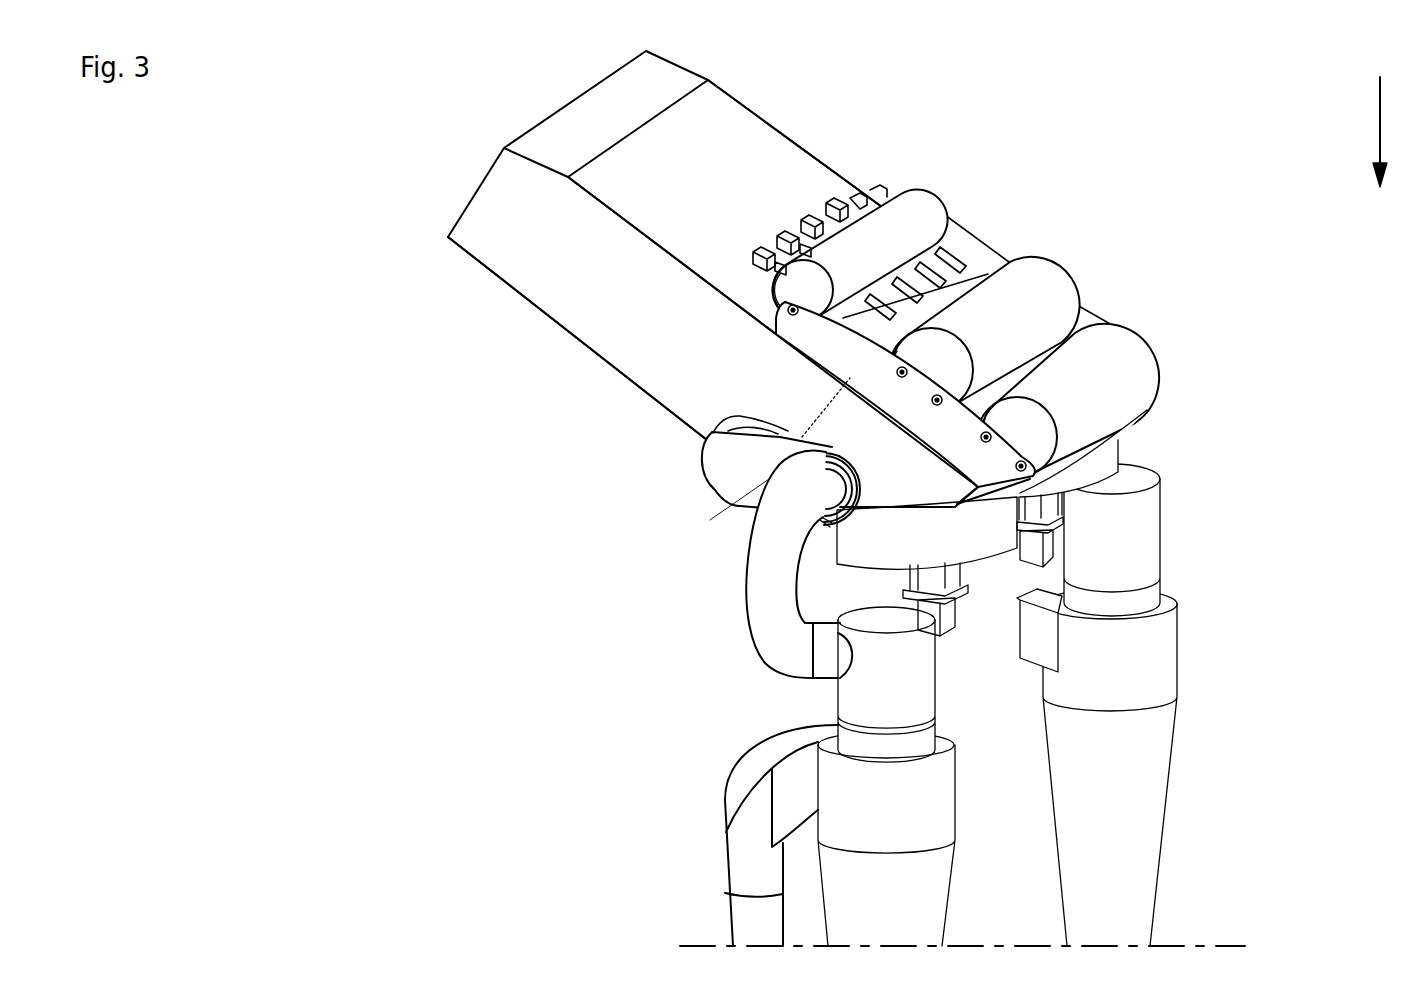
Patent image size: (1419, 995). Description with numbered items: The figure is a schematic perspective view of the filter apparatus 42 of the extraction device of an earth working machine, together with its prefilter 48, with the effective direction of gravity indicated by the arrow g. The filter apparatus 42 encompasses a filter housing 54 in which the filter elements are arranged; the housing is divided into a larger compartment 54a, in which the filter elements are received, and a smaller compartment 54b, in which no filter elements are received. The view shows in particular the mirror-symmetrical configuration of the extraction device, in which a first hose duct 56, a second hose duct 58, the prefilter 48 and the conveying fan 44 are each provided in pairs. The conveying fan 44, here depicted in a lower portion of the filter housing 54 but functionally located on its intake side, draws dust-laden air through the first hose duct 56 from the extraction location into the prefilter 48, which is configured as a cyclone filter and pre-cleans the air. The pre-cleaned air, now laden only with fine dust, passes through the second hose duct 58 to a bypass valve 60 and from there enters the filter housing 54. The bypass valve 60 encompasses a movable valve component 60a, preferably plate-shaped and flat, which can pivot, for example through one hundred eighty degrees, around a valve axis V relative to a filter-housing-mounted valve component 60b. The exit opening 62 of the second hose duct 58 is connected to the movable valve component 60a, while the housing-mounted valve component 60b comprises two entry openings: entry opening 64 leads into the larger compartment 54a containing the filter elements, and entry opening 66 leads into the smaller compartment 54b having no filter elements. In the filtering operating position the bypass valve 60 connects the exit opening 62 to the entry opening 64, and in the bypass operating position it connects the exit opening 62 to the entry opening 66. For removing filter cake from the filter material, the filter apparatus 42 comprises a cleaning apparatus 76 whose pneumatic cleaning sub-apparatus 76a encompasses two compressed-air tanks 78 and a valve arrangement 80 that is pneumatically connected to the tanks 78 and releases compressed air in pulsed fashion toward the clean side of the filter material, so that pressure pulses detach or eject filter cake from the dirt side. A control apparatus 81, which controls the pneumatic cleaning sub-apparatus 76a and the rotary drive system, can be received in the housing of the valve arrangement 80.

The filter apparatus 42 is at (835, 150).
The conveying fan 44 is at (895, 559).
The prefilter 48 is at (1117, 680).
The filter housing 54 is at (765, 178).
The larger compartment 54a is at (572, 324).
The smaller compartment 54b is at (880, 489).
The first hose duct 56 is at (750, 923).
The second hose duct 58 is at (767, 613).
The bypass valve 60 is at (722, 464).
The movable valve component 60a is at (723, 482).
The filter-housing-mounted valve component 60b is at (720, 423).
The exit opening 62 is at (830, 450).
The entry opening 64 is at (733, 430).
The entry opening 66 is at (827, 521).
The cleaning apparatus 76 is at (927, 324).
The pneumatic cleaning sub-apparatus 76a is at (777, 214).
The compressed-air tank 78 is at (1000, 333).
The valve arrangement 80 is at (853, 259).
The control apparatus 81 is at (882, 259).
The valve axis V is at (727, 507).
The direction of gravity g is at (1380, 100).